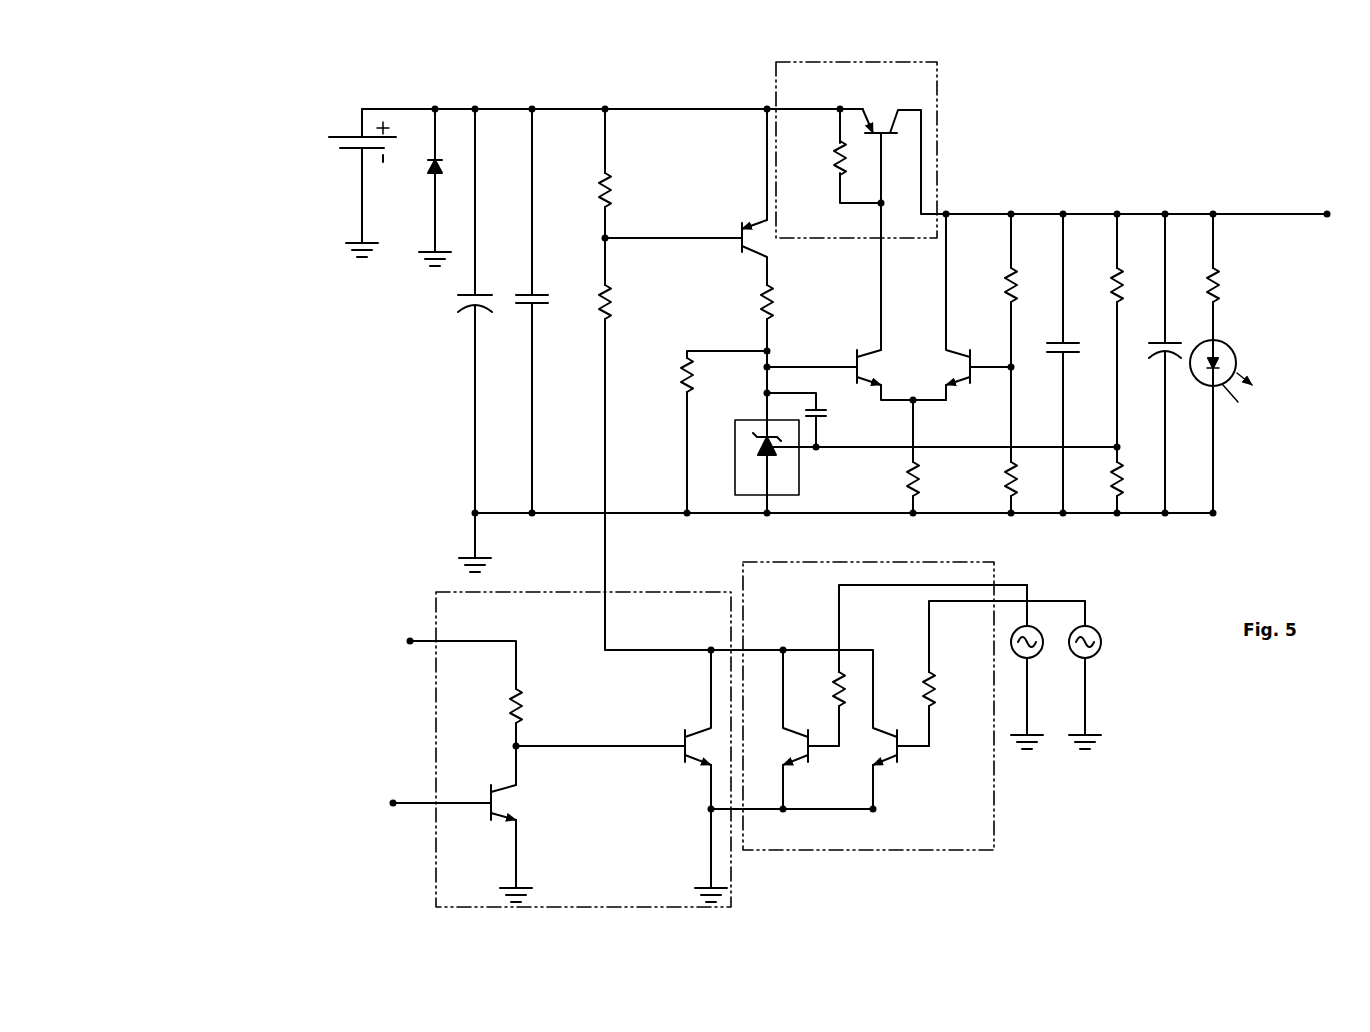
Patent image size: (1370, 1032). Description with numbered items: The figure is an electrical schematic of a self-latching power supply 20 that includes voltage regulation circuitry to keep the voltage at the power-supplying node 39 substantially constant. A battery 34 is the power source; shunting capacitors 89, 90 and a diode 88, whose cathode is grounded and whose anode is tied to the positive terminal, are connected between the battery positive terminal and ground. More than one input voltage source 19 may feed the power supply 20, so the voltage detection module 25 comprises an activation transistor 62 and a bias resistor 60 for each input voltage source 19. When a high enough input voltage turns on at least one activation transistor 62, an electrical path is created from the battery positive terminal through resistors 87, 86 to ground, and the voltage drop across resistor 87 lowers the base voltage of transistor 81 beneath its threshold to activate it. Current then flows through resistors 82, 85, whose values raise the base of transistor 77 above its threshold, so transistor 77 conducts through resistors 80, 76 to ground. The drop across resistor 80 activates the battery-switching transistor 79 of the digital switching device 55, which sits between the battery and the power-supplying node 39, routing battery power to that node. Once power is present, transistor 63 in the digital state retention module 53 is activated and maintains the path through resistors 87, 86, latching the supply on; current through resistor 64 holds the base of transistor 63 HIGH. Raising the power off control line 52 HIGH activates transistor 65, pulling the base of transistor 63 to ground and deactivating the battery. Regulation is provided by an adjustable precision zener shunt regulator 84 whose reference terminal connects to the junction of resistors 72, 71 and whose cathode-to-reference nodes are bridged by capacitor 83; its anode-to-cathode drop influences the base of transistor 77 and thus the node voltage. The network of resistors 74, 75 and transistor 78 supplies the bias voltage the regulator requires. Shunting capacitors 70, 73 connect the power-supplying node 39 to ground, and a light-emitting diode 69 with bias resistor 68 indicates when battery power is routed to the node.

The self-latching power supply 20 is at (362, 58).
The battery 34 is at (312, 143).
The diode 88 is at (428, 166).
The shunting capacitor 89 is at (452, 305).
The shunting capacitor 90 is at (553, 302).
The resistor 87 is at (625, 196).
The resistor 86 is at (625, 302).
The transistor 81 is at (735, 231).
The resistor 82 is at (788, 302).
The resistor 85 is at (677, 384).
The adjustable precision zener shunt regulator 84 is at (732, 446).
The capacitor 83 is at (830, 424).
The digital switching device 55 is at (811, 86).
The battery-switching transistor 79 is at (880, 108).
The resistor 80 is at (830, 158).
The power-supplying node 39 is at (1327, 205).
The transistor 77 is at (886, 367).
The transistor 78 is at (948, 367).
The resistor 76 is at (900, 485).
The resistor 75 is at (997, 485).
The resistor 74 is at (1022, 287).
The shunting capacitor 73 is at (1080, 346).
The resistor 72 is at (1128, 290).
The resistor 71 is at (1122, 470).
The shunting capacitor 70 is at (1150, 356).
The bias resistor 68 is at (1226, 290).
The light-emitting diode 69 is at (1258, 367).
The digital state retention module 53 is at (471, 615).
The voltage detection module 25 is at (778, 584).
The resistor 64 is at (505, 706).
The transistor 65 is at (492, 830).
The transistor 63 is at (676, 736).
The power off control line 52 is at (347, 830).
The activation transistor 62 is at (795, 746).
The bias resistor 60 is at (851, 703).
The input voltage source 19 is at (1043, 654).